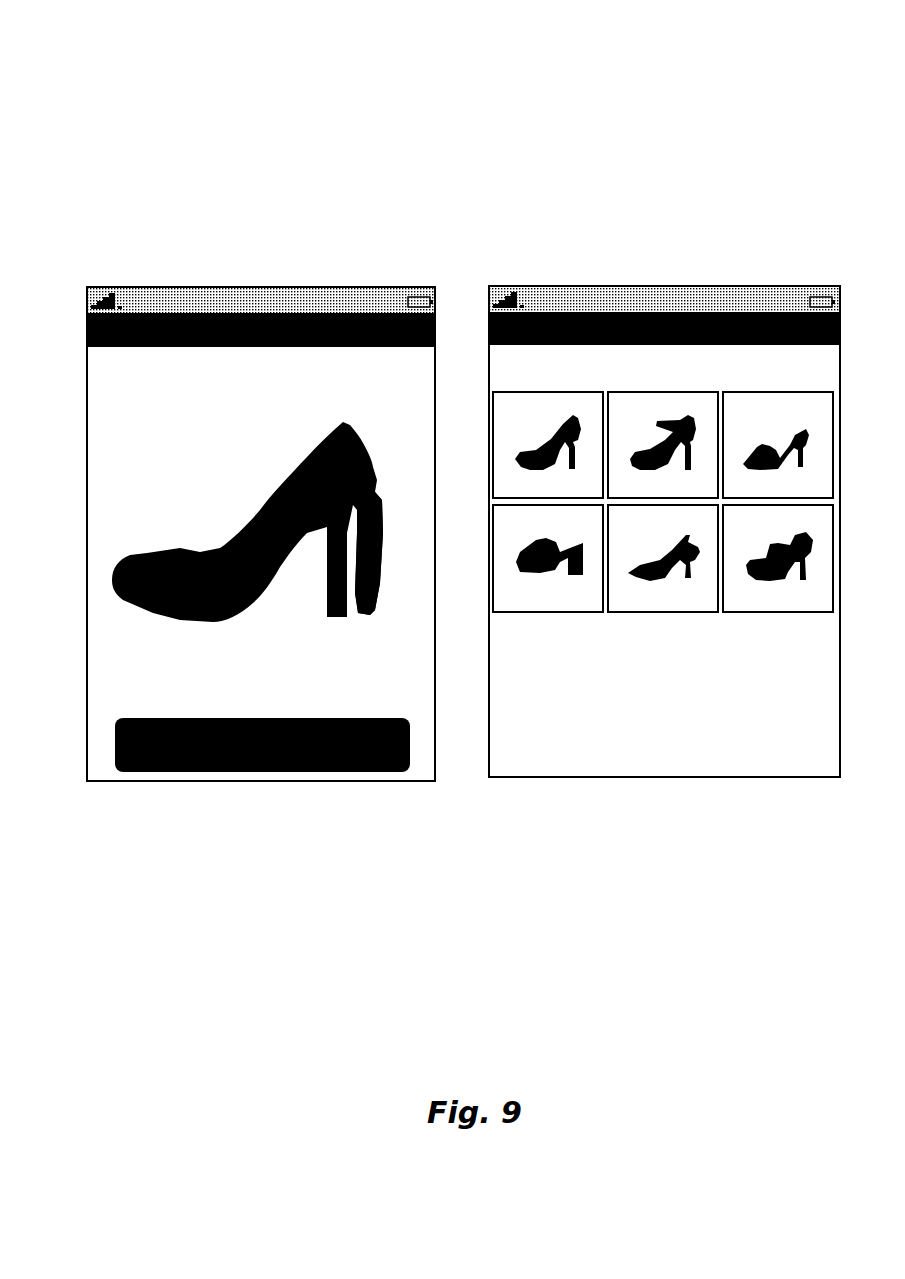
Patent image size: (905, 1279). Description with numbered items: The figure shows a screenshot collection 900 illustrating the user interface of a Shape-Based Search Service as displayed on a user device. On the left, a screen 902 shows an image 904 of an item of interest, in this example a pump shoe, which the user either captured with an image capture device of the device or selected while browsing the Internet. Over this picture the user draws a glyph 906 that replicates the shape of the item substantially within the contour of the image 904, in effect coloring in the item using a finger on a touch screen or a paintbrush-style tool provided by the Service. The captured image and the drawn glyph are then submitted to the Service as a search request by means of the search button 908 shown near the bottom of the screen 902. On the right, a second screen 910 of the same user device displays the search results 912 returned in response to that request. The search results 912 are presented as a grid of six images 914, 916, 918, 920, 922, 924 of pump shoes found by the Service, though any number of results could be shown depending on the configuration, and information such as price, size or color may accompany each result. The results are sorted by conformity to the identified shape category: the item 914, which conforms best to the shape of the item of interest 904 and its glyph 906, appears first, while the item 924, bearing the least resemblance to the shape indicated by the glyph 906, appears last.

The screenshot collection 900 is at (662, 95).
The screen 902 is at (288, 787).
The image 904 is at (127, 622).
The glyph 906 is at (369, 620).
The search button 908 is at (348, 777).
The screen 910 is at (539, 766).
The search results 912 is at (690, 701).
The image of item 914 is at (504, 491).
The image of item 916 is at (541, 610).
The image of item 918 is at (629, 487).
The image of item 920 is at (644, 597).
The image of item 922 is at (742, 489).
The image of item 924 is at (768, 599).